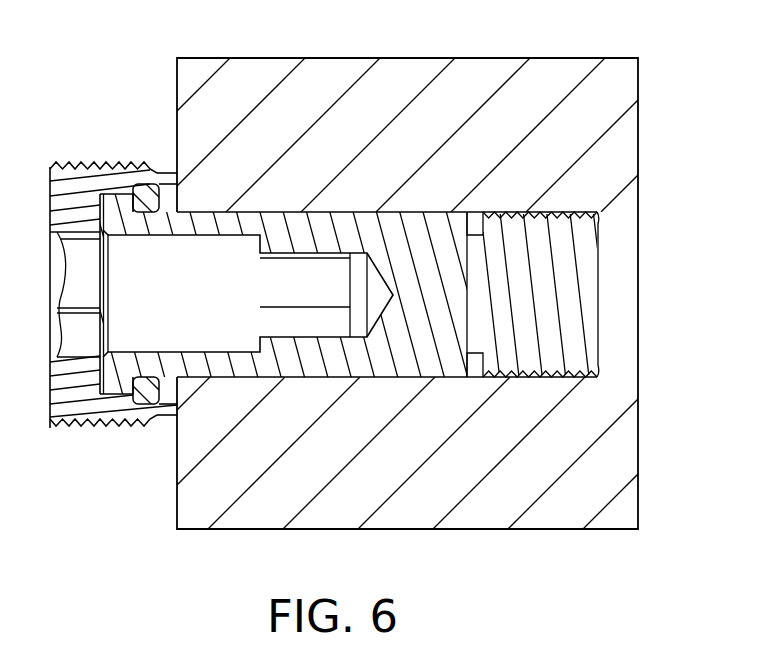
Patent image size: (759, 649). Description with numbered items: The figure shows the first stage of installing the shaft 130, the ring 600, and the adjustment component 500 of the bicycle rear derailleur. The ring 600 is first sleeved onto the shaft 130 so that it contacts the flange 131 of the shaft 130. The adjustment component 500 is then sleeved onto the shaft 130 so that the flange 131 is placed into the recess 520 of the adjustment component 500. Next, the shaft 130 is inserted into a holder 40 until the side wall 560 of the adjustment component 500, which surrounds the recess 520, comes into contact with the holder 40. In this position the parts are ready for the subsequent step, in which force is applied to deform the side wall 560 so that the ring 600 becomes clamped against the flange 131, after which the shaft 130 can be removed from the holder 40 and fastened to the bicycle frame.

The holder 40 is at (418, 106).
The shaft 130 is at (560, 293).
The flange 131 is at (113, 207).
The adjustment component 500 is at (63, 200).
The recess 520 is at (176, 388).
The side wall 560 is at (167, 180).
The ring 600 is at (150, 201).